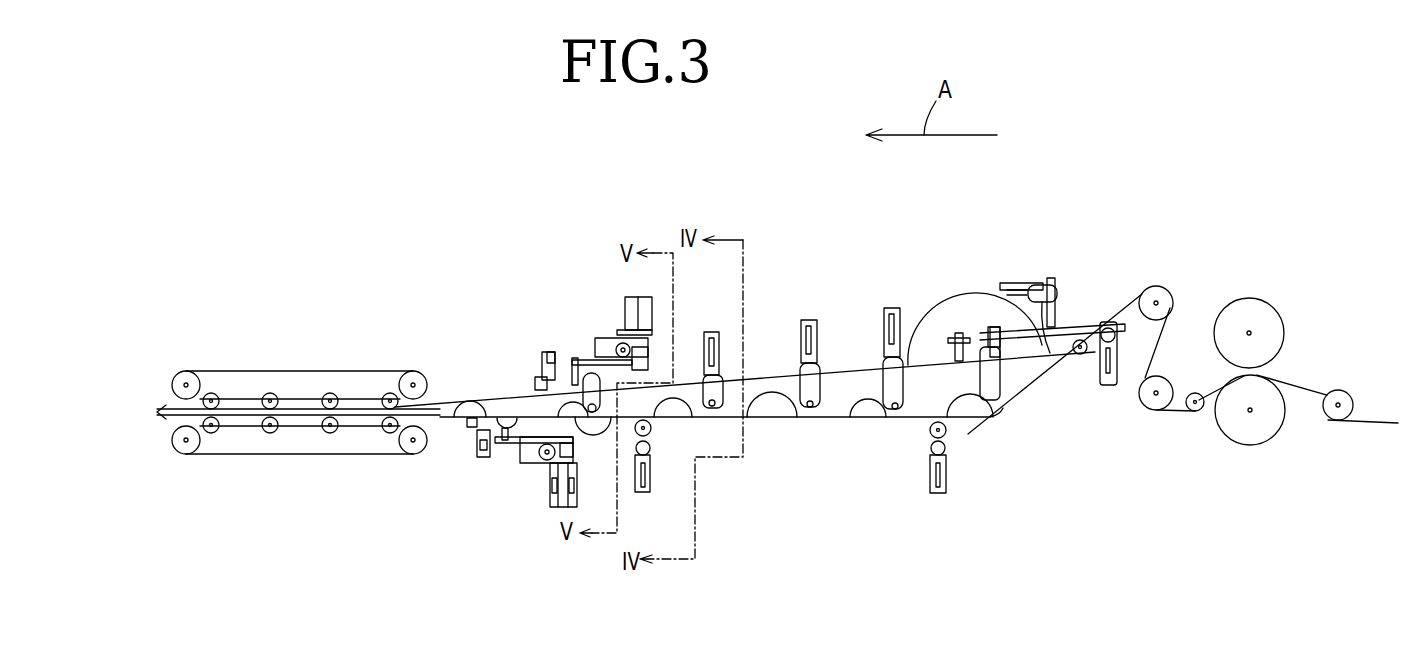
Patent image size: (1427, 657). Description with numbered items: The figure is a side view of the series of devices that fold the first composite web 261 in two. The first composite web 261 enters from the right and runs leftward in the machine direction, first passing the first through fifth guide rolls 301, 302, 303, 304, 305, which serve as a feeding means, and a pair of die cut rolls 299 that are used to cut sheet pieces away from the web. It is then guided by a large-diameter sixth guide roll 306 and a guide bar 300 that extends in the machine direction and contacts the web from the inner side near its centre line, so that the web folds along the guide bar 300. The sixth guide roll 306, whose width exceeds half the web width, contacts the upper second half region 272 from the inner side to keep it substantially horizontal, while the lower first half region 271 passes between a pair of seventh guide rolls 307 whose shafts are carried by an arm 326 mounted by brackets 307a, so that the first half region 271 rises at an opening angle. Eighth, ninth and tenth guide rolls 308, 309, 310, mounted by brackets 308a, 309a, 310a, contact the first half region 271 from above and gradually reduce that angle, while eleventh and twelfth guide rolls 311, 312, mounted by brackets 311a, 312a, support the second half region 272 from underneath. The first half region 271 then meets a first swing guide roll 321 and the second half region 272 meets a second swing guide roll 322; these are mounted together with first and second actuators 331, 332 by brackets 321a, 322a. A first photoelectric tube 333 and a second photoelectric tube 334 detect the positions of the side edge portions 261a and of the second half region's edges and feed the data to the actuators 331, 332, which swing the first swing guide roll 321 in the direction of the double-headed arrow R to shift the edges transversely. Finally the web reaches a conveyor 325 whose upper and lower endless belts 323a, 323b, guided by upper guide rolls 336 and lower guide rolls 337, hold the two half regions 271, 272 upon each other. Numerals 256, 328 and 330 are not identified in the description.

The first composite web 261 is at (163, 397).
The side edge portions 261a is at (860, 367).
The suction roller 256 is at (868, 407).
The first half region 271 is at (937, 377).
The second half region 272 is at (830, 420).
The die cut rolls 299 is at (1273, 338).
The guide bar 300 is at (1058, 310).
The first guide roll 301 is at (1355, 393).
The second guide roll 302 is at (1193, 411).
The third guide roll 303 is at (1162, 382).
The fourth guide roll 304 is at (1160, 293).
The fifth guide roll 305 is at (1078, 354).
The sixth guide roll 306 is at (955, 285).
The seventh guide rolls 307 is at (975, 390).
The brackets 307a is at (1109, 387).
The eighth guide roll 308 is at (895, 420).
The bracket 308a is at (895, 310).
The ninth guide roll 309 is at (808, 410).
The bracket 309a is at (800, 320).
The tenth guide roll 310 is at (697, 382).
The bracket 310a is at (722, 330).
The eleventh guide roll 311 is at (945, 433).
The bracket 311a is at (942, 493).
The twelfth guide roll 312 is at (651, 427).
The bracket 312a is at (638, 492).
The first swing guide roll 321 is at (583, 380).
The bracket 321a is at (630, 302).
The second swing guide roll 322 is at (512, 443).
The bracket 322a is at (555, 503).
The upper endless belt 323a is at (316, 365).
The lower endless belt 323b is at (268, 457).
The conveyor 325 is at (313, 382).
The arm 326 is at (1012, 340).
The support 328 is at (625, 302).
The belt roller 330 is at (412, 372).
The first actuator 331 is at (613, 340).
The second actuator 332 is at (533, 463).
The first photoelectric tube 333 is at (535, 383).
The second photoelectric tube 334 is at (470, 427).
The upper guide rolls 336 is at (272, 392).
The lower guide rolls 337 is at (200, 415).
The double-headed arrow R is at (590, 430).